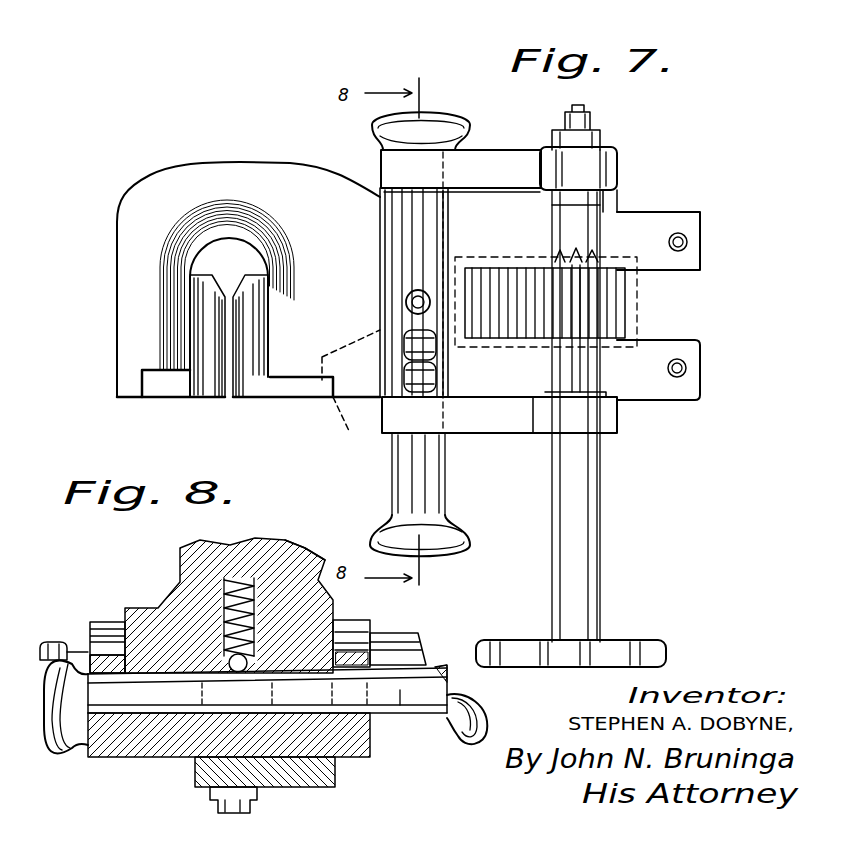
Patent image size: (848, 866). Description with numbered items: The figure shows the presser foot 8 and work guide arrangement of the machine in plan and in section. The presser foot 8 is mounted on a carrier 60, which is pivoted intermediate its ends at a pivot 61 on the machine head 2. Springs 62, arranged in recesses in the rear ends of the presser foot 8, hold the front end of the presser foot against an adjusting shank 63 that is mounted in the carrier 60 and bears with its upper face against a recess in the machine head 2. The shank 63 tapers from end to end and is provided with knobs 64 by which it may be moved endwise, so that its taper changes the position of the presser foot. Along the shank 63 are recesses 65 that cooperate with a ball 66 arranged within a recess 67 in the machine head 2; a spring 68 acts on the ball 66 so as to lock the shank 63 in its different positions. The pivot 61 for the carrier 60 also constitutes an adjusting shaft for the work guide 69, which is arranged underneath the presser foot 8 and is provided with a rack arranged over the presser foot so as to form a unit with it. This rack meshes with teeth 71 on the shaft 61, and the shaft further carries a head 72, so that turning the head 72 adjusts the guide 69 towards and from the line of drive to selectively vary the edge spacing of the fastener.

In FIG. 8, the machine head 2 is at (190, 550).
In FIG. 7, the presser foot 8 is at (160, 196).
In FIG. 7, the carrier 60 is at (500, 156).
In FIG. 8, the carrier 60 is at (100, 622).
In FIG. 7, the pivot 61 is at (580, 110).
In FIG. 8, the pivot 61 is at (46, 642).
In FIG. 7, the springs 62 is at (688, 242).
In FIG. 7, the adjusting shank 63 is at (400, 220).
In FIG. 8, the adjusting shank 63 is at (400, 706).
In FIG. 7, the knobs 64 is at (440, 110).
In FIG. 8, the knobs 64 is at (60, 752).
In FIG. 7, the recesses 65 is at (404, 348).
In FIG. 8, the recesses 65 is at (270, 676).
In FIG. 7, the ball 66 is at (406, 300).
In FIG. 8, the ball 66 is at (216, 697).
In FIG. 8, the recess 67 is at (295, 575).
In FIG. 8, the spring 68 is at (222, 600).
In FIG. 7, the work guide 69 is at (380, 420).
In FIG. 8, the work guide 69 is at (315, 786).
In FIG. 7, the teeth 71 is at (562, 368).
In FIG. 7, the head 72 is at (630, 645).